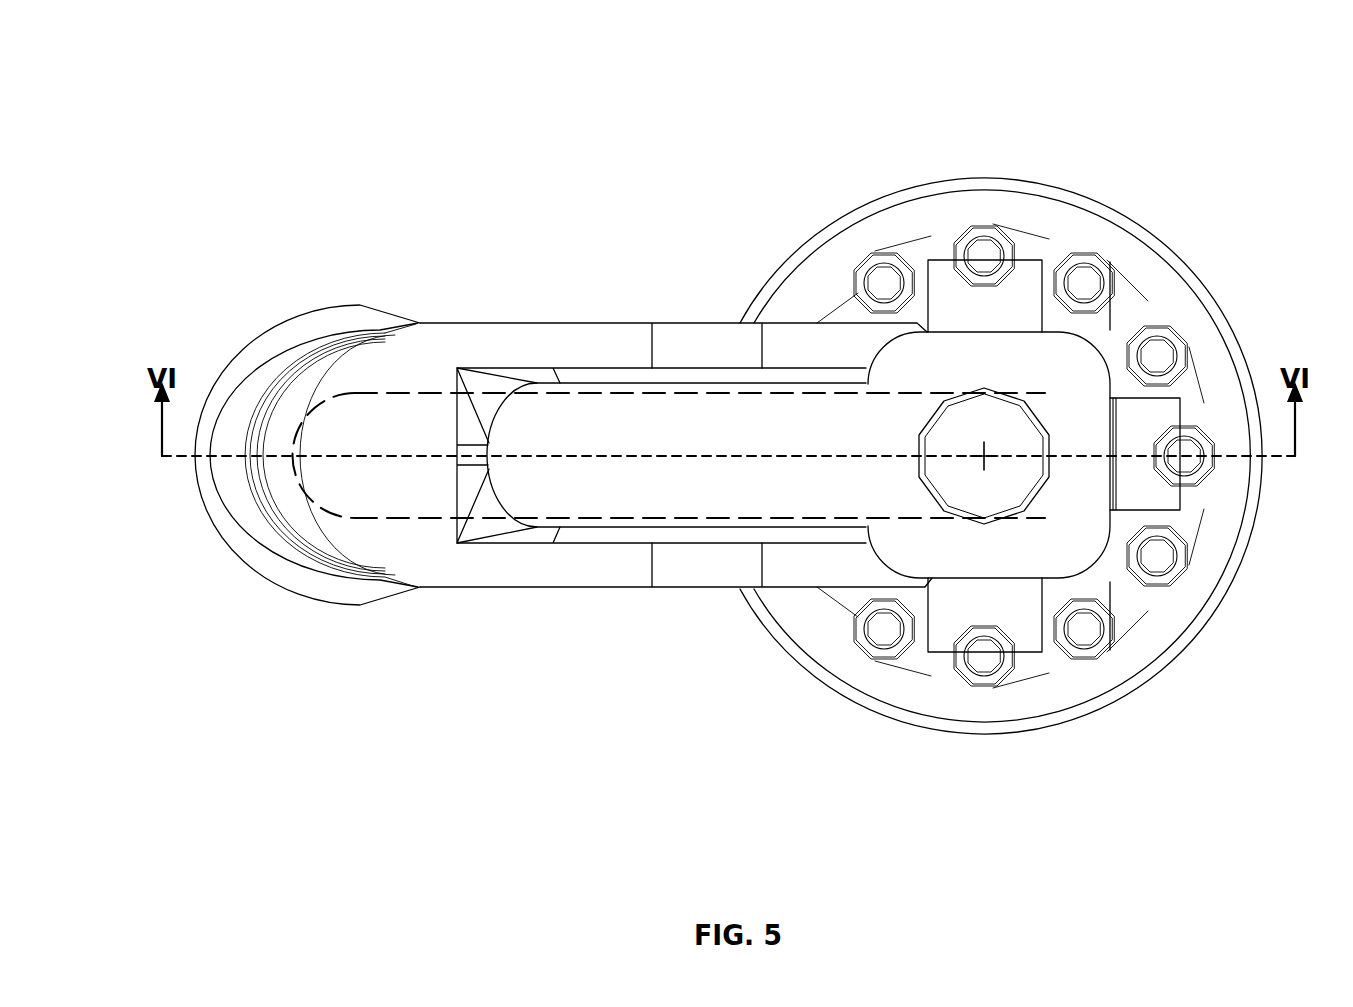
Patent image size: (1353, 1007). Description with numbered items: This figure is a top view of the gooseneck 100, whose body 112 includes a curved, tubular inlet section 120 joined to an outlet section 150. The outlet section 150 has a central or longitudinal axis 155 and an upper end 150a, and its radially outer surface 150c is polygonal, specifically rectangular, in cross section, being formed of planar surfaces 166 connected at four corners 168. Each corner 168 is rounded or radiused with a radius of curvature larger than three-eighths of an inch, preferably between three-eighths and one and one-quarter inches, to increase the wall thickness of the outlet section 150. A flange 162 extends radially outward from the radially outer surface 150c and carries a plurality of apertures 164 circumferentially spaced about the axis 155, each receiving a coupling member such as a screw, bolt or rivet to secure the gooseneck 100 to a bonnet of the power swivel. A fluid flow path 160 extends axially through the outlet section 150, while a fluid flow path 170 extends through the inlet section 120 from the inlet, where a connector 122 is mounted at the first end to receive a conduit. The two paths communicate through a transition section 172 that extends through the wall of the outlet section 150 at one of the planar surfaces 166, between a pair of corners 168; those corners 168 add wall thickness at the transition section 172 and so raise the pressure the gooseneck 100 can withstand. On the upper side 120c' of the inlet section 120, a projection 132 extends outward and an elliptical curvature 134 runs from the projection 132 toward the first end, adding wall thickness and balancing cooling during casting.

The gooseneck 100 is at (286, 70).
The body 112 is at (698, 286).
The inlet section 120 is at (361, 282).
The upper side 120c' is at (661, 412).
The connector 122 is at (302, 525).
The projection 132 is at (534, 536).
The elliptical curvature 134 is at (412, 547).
The outlet section 150 is at (1165, 617).
The upper end 150a is at (1042, 350).
The radially outer surface 150c is at (1022, 330).
The central axis 155 is at (985, 460).
The fluid flow path 160 is at (1064, 439).
The flange 162 is at (1057, 697).
The apertures 164 is at (883, 262).
The planar surfaces 166 is at (977, 330).
The corners 168 is at (880, 352).
The fluid flow path 170 is at (418, 393).
The transition section 172 is at (891, 497).